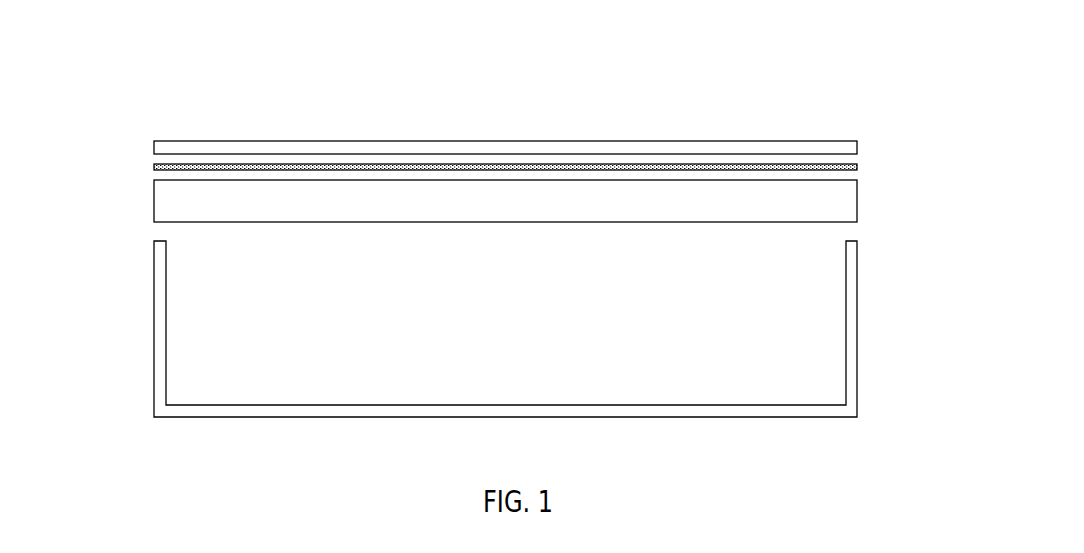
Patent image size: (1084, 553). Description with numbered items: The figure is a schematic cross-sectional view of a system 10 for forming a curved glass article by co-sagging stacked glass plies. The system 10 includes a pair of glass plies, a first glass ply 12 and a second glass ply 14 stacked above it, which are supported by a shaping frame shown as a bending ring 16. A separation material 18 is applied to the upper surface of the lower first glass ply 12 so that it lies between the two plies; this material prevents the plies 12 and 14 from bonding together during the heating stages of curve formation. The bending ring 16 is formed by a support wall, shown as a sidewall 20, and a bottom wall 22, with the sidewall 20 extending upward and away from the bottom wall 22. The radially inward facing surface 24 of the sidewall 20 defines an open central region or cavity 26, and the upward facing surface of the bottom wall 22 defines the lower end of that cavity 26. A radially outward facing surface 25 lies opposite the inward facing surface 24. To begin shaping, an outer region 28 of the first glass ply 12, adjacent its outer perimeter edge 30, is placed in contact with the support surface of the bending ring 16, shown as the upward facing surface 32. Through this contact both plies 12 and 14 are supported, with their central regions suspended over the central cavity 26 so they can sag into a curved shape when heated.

The system 10 is at (929, 84).
The first glass ply 12 is at (839, 206).
The second glass ply 14 is at (818, 143).
The bending ring 16 is at (914, 336).
The separation material 18 is at (857, 169).
The sidewall 20 is at (160, 350).
The bottom wall 22 is at (272, 416).
The radially inward facing surface 24 is at (178, 327).
The radially outward facing surface 25 is at (869, 304).
The cavity 26 is at (389, 374).
The outer region 28 is at (99, 217).
The outer perimeter edge 30 is at (144, 195).
The upward facing surface 32 is at (174, 234).